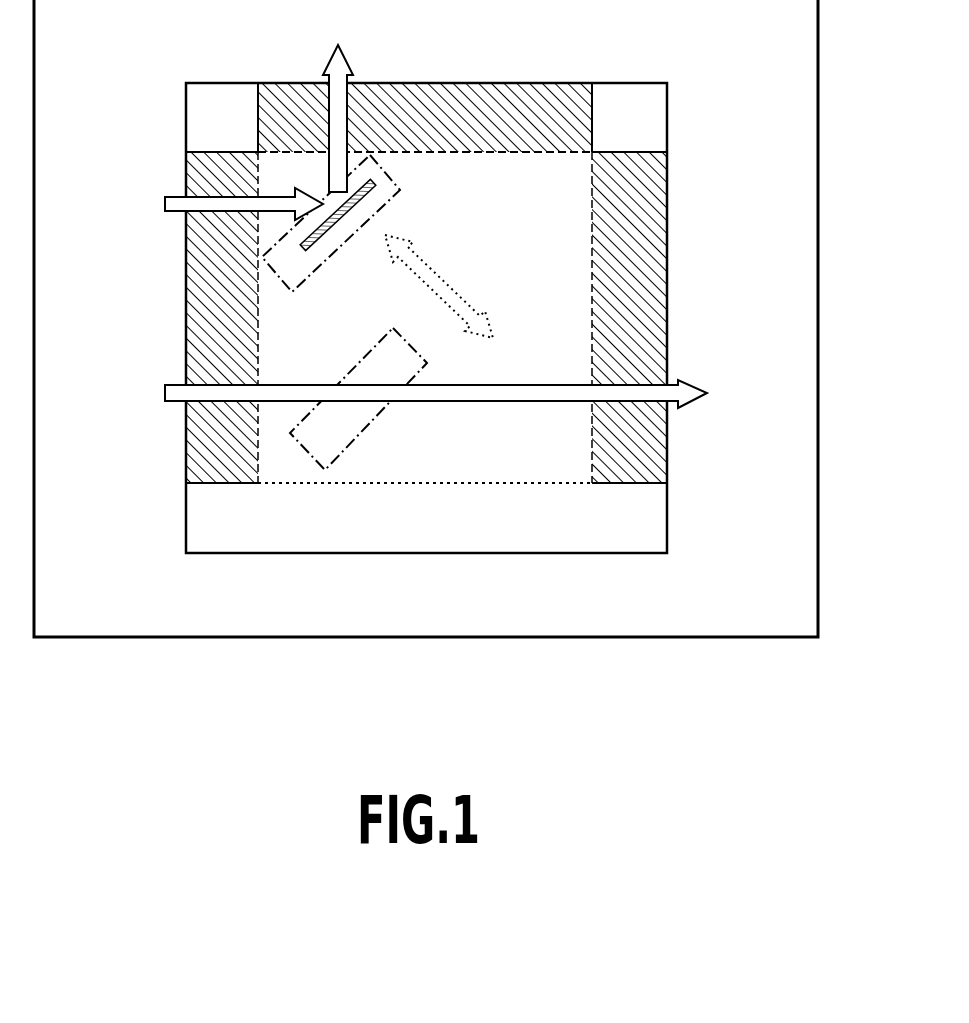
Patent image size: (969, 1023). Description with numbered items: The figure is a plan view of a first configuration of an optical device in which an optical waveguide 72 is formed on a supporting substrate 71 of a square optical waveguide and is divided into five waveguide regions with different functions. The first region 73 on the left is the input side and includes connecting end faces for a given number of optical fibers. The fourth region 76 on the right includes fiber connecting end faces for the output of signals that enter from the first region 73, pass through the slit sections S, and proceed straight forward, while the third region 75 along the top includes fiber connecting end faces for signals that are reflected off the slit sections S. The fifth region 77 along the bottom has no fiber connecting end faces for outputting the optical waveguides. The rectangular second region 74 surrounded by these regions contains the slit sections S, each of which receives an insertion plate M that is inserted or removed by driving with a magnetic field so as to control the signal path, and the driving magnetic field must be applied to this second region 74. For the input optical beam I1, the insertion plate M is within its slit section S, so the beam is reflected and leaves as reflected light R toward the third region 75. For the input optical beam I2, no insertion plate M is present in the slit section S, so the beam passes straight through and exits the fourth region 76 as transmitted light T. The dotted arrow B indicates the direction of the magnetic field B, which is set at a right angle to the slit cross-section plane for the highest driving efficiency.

The supporting substrate 71 is at (823, 487).
The optical waveguide 72 is at (678, 195).
The region 1 73 is at (186, 431).
The region 2 74 is at (388, 460).
The region 3 75 is at (417, 82).
The region 4 76 is at (630, 472).
The region 5 77 is at (262, 538).
The insertion plate M is at (326, 248).
The slit section S is at (298, 290).
The magnetic field B is at (439, 286).
The reflected light R is at (338, 105).
The transmitted light T is at (718, 394).
The optical beam I1 is at (232, 204).
The optical beam I2 is at (424, 394).